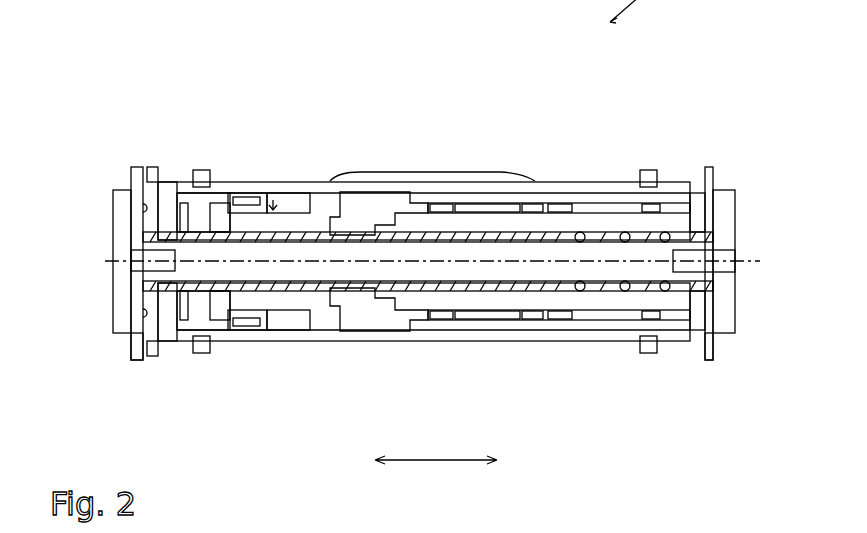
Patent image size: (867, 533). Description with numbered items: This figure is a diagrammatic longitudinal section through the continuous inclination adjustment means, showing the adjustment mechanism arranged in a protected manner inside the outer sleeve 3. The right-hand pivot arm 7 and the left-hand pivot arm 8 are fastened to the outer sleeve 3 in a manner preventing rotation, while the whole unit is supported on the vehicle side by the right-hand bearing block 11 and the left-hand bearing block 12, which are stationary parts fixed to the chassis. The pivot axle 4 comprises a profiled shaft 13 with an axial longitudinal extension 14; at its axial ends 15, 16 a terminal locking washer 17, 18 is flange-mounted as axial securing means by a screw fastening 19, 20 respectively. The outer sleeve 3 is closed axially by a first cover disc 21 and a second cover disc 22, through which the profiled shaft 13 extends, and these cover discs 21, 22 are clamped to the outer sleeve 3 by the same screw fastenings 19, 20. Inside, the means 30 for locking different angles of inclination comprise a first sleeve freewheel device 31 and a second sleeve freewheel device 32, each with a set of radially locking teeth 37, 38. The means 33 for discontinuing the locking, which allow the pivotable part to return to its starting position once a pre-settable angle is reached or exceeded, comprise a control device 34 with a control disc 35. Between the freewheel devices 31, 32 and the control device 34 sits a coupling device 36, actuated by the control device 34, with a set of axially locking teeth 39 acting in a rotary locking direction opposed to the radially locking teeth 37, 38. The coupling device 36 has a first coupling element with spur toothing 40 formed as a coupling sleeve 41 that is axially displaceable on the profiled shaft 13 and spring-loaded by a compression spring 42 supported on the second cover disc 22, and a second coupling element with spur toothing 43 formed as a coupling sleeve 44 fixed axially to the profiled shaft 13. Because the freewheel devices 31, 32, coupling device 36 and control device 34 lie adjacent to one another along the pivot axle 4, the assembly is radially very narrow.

The outer sleeve 3 is at (533, 180).
The pivot axle 4 is at (764, 258).
The right-hand pivot arm 7 is at (200, 170).
The left-hand pivot arm 8 is at (646, 170).
The right-hand bearing block 11 is at (134, 353).
The left-hand bearing block 12 is at (714, 350).
The profiled shaft 13 is at (418, 343).
The axial longitudinal extension 14 is at (440, 458).
The axial end of the profiled shaft 15 is at (713, 395).
The axial end of the profiled shaft 16 is at (145, 376).
The terminal locking washer 17 is at (720, 185).
The terminal locking washer 18 is at (114, 188).
The screw fastening 19 is at (728, 268).
The screw fastening 20 is at (120, 262).
The first cover disc 21 is at (678, 182).
The second cover disc 22 is at (165, 182).
The means for locking different angles of inclination 30 is at (551, 368).
The first sleeve freewheel device 31 is at (482, 343).
The second sleeve freewheel device 32 is at (603, 343).
The means for discontinuing the locking 33 is at (285, 148).
The control device 34 is at (250, 343).
The control disc 35 is at (236, 190).
The coupling device 36 is at (335, 368).
The set of radially locking teeth 37 is at (463, 200).
The set of radially locking teeth 38 is at (585, 200).
The set of axially locking teeth 39 is at (330, 181).
The first coupling element with spur toothing 40 is at (292, 343).
The coupling sleeve 41 is at (272, 190).
The compression spring 42 is at (182, 356).
The second coupling element with spur toothing 43 is at (392, 190).
The coupling sleeve 44 is at (490, 200).